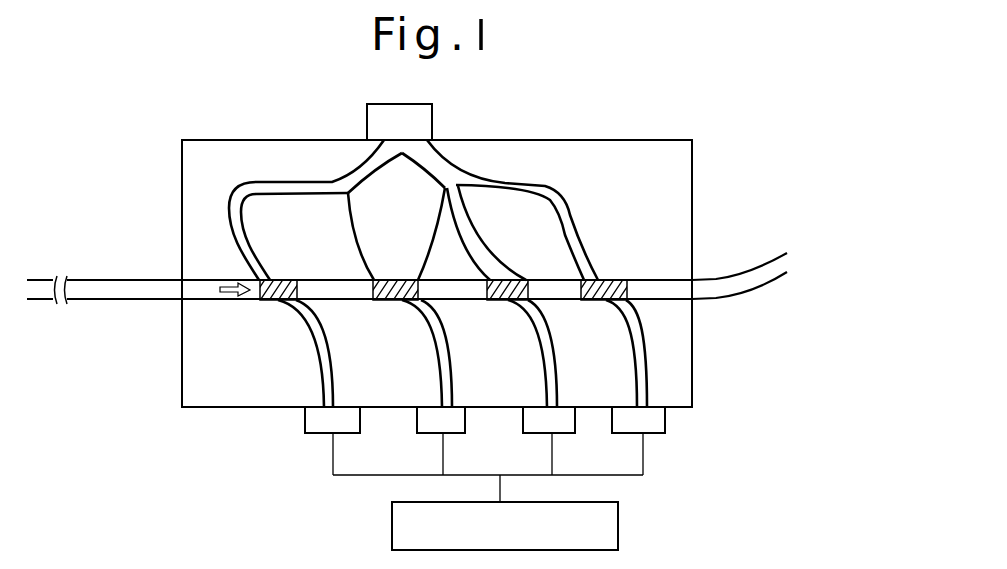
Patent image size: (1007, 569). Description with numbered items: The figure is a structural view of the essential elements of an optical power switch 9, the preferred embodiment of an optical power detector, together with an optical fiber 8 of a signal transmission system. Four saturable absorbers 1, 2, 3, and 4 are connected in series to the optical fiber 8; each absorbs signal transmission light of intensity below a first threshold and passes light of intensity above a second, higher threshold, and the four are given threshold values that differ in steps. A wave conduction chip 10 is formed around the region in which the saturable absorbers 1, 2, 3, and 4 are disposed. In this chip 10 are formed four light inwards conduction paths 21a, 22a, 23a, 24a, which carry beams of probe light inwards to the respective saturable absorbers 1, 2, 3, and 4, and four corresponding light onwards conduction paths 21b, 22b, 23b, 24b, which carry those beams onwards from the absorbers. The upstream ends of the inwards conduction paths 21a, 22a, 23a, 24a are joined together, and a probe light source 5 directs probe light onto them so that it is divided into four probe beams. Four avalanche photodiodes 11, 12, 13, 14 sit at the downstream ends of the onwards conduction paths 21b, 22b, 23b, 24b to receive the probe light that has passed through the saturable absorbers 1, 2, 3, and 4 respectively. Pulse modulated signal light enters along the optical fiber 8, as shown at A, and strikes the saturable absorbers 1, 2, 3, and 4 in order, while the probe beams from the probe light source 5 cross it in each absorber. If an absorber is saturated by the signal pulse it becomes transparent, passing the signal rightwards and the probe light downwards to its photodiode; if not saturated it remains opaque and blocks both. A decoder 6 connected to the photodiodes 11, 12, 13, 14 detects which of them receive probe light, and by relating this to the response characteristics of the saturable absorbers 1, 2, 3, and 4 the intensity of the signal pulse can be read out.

The saturable absorber 1 is at (266, 300).
The saturable absorber 2 is at (392, 301).
The saturable absorber 3 is at (502, 301).
The saturable absorber 4 is at (596, 301).
The probe light source 5 is at (432, 113).
The decoder 6 is at (618, 524).
The optical fiber 8 is at (135, 290).
The optical power switch 9 is at (606, 131).
The wave conduction chip 10 is at (693, 376).
The avalanche photodiode 11 is at (305, 424).
The avalanche photodiode 12 is at (417, 424).
The avalanche photodiode 13 is at (523, 424).
The avalanche photodiode 14 is at (633, 426).
The light inwards conduction path 21a is at (262, 268).
The light inwards conduction path 22a is at (365, 254).
The light inwards conduction path 23a is at (477, 256).
The light inwards conduction path 24a is at (594, 258).
The light onwards conduction path 21b is at (320, 382).
The light onwards conduction path 22b is at (441, 384).
The light onwards conduction path 23b is at (545, 384).
The light onwards conduction path 24b is at (636, 384).
The incident soliton pulse signal light A is at (226, 280).